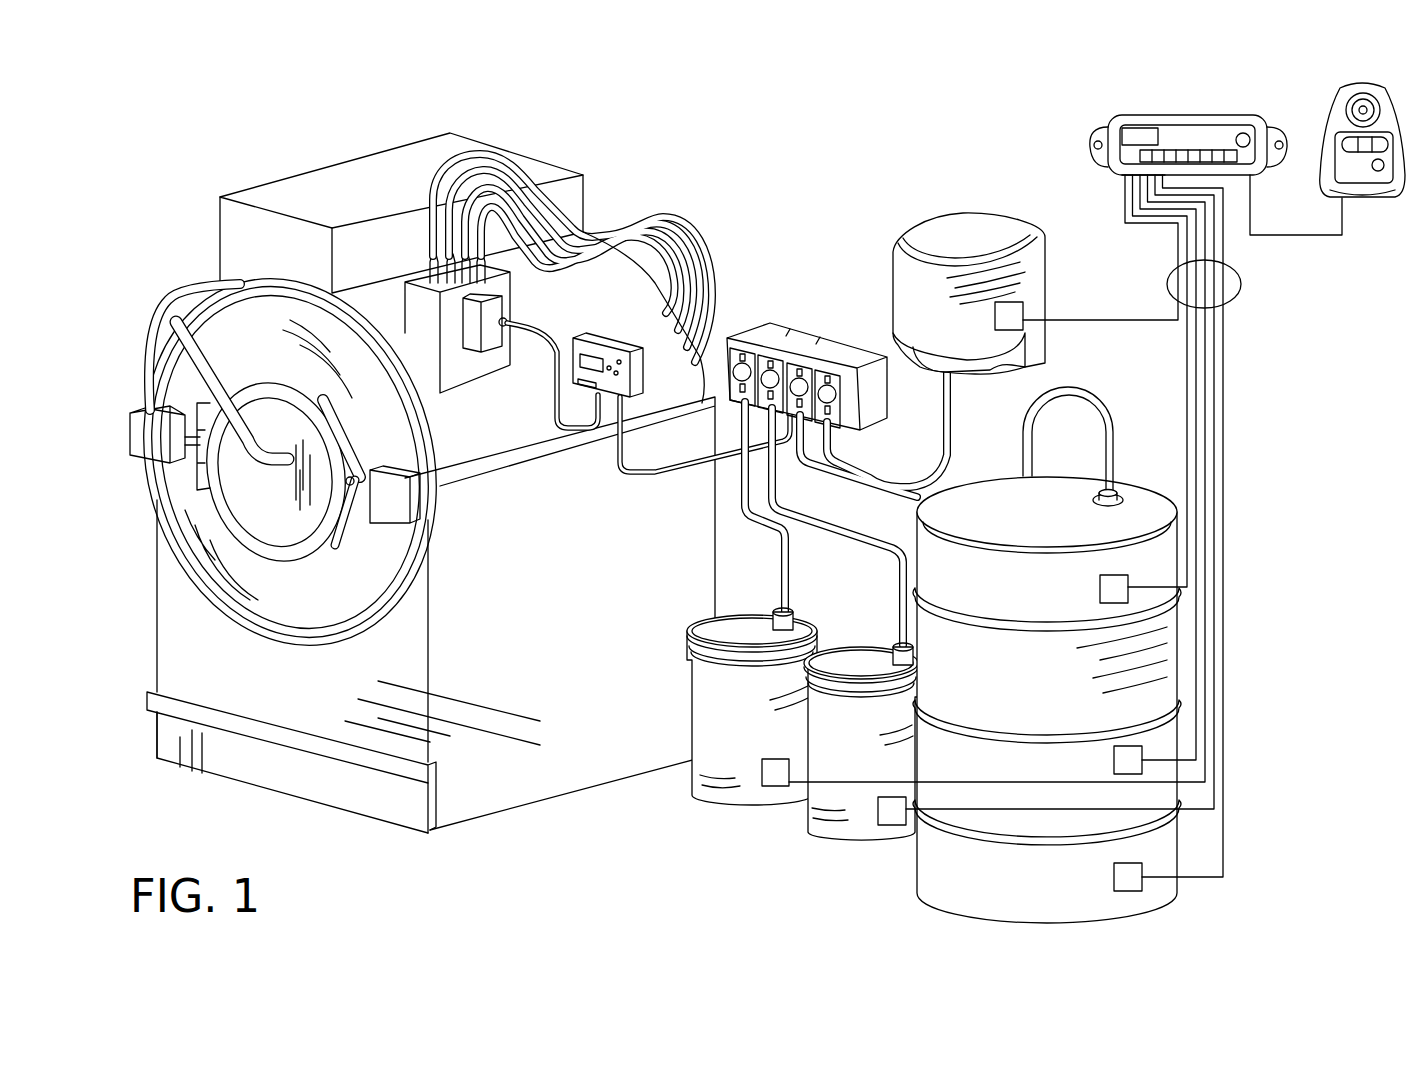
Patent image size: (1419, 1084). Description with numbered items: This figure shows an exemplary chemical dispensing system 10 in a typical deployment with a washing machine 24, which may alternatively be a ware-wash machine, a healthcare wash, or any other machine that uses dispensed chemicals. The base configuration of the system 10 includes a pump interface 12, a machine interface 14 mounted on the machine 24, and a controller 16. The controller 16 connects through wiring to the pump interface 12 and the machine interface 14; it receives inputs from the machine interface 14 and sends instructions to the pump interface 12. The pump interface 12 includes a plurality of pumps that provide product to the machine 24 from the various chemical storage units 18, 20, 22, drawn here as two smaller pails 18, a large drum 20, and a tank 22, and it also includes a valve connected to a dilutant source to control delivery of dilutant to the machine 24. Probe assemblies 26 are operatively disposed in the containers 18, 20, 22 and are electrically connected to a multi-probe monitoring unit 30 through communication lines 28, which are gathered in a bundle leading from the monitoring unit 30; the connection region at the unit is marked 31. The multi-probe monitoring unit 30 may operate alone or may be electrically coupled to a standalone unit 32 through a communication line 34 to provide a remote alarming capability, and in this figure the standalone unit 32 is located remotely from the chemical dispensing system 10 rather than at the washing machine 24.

The chemical dispensing system 10 is at (738, 176).
The pump interface 12 is at (810, 340).
The machine interface 14 is at (407, 305).
The controller 16 is at (583, 392).
The chemical storage unit 18 is at (693, 793).
The chemical storage unit 20 is at (1170, 890).
The chemical storage unit 22 is at (1047, 253).
The machine 24 is at (240, 673).
The probe assembly 26 is at (995, 320).
The communication line 28 is at (1236, 297).
The multi-probe monitoring unit 30 is at (1143, 116).
The controller connector 31 is at (1121, 178).
The standalone unit 32 is at (1333, 108).
The communication line 34 is at (1340, 238).